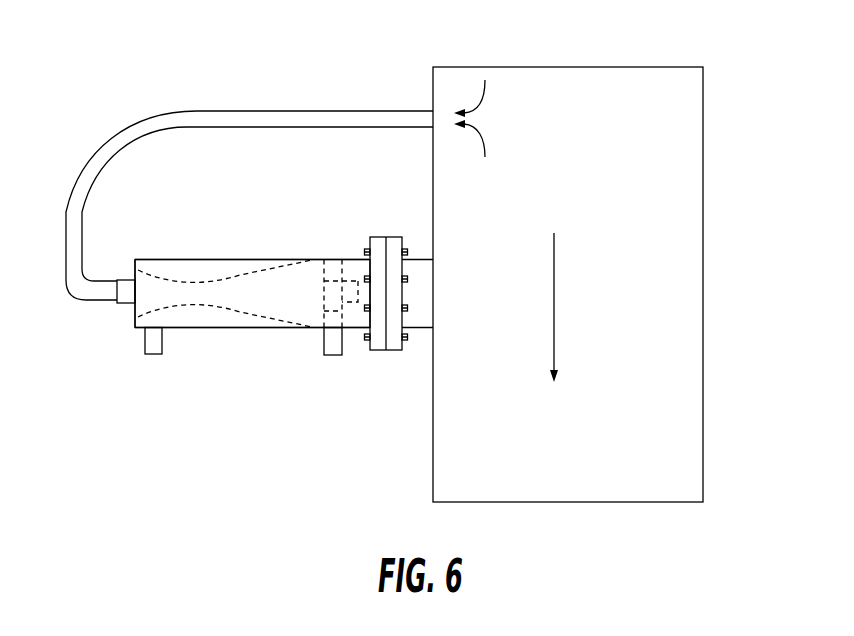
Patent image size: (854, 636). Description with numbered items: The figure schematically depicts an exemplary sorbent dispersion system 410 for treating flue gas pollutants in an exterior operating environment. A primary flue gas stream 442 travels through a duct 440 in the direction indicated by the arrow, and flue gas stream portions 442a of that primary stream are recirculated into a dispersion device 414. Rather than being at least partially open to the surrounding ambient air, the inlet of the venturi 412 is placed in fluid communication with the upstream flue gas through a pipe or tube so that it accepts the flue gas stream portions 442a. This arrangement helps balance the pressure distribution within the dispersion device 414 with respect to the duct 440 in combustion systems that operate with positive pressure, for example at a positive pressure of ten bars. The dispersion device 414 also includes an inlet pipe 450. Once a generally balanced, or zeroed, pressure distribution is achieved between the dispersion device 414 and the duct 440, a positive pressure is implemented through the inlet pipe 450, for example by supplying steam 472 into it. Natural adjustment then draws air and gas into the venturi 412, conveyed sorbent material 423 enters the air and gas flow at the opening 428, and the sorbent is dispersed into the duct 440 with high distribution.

The system 410 is at (276, 64).
The venturi 412 is at (243, 272).
The dispersion device 414 is at (228, 239).
The opening 428 is at (351, 284).
The conveyed sorbent material 423 is at (340, 370).
The steam 472 is at (155, 368).
The inlet pipe 450 is at (145, 354).
The duct 440 is at (688, 148).
The primary flue gas stream 442 is at (557, 315).
The flue gas stream portions 442a is at (486, 70).